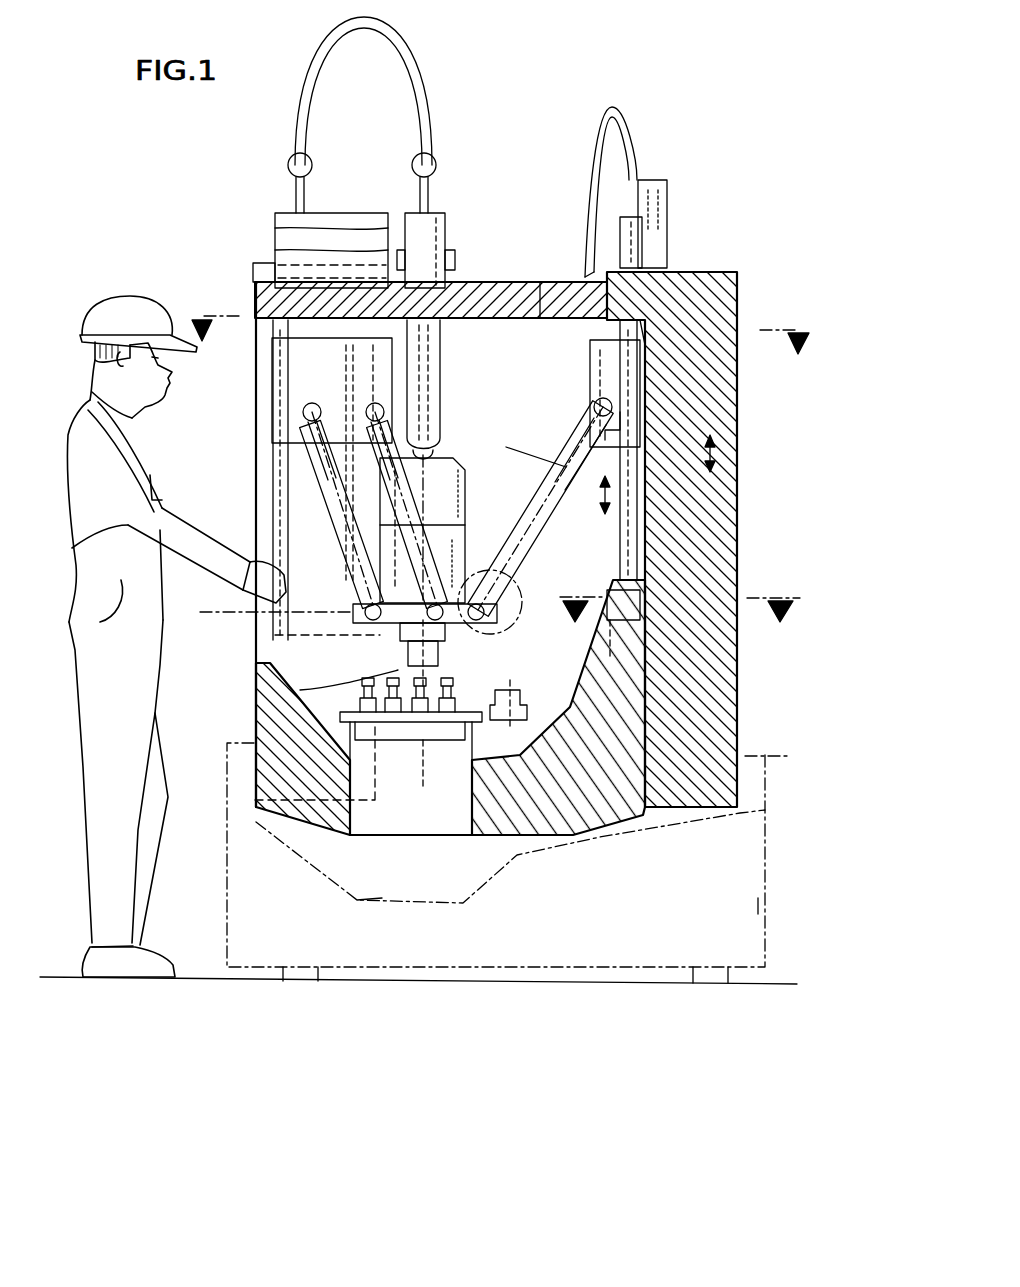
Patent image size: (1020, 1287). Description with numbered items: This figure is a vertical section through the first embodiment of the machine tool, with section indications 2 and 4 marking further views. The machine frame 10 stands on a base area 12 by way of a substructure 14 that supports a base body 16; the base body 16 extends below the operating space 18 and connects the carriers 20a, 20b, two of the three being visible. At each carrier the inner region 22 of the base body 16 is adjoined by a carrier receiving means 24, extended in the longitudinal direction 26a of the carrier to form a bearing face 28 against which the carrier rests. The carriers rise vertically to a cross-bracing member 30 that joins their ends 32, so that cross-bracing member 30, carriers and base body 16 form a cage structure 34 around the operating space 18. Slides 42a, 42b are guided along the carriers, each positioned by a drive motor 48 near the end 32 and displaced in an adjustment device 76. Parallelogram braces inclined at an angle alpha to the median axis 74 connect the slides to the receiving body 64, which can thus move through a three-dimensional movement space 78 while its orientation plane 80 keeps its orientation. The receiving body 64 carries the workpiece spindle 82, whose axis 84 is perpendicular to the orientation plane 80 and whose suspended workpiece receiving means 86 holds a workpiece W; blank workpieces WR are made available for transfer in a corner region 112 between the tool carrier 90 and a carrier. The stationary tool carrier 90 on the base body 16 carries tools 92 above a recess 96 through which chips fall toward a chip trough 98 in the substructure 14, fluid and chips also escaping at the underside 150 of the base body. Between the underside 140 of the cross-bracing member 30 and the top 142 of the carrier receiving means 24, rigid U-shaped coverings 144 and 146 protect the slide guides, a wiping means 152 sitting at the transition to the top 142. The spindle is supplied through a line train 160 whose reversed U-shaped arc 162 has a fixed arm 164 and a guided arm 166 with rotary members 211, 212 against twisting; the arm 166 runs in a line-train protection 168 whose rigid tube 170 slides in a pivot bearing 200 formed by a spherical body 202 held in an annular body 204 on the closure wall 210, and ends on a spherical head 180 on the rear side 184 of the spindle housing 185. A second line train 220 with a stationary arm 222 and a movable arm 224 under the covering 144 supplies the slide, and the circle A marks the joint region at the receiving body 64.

The machine frame 10 is at (718, 832).
The base area 12 is at (748, 983).
The substructure 14 is at (758, 906).
The base body 16 is at (583, 815).
The operating space 18 is at (520, 755).
The carrier 20a is at (650, 713).
The carrier 20b is at (272, 436).
The inner region 22 is at (510, 728).
The carrier receiving means 24 is at (700, 822).
The longitudinal direction 26a is at (708, 443).
The bearing face 28 is at (722, 700).
The cross-bracing member 30 is at (570, 300).
The end 32 is at (707, 296).
The cage structure 34 is at (520, 276).
The slide 42a is at (612, 372).
The slide 42b is at (300, 398).
The drive motor 48 is at (642, 216).
The receiving body 64 is at (398, 632).
The median axis 74 is at (416, 188).
The adjustment device 76 is at (638, 490).
The movement space 78 is at (550, 562).
The orientation plane 80 is at (236, 614).
The workpiece spindle 82 is at (455, 497).
The spindle axis 84 is at (345, 522).
The workpiece receiving means 86 is at (405, 652).
The tool carrier 90 is at (352, 740).
The tools 92 is at (340, 716).
The recess 96 is at (482, 700).
The chip trough 98 is at (382, 898).
The corner region 112 is at (748, 760).
The underside 140 is at (640, 332).
The top 142 is at (640, 618).
The covering 144 is at (650, 210).
The covering 146 is at (628, 515).
The underside 150 is at (640, 817).
The wiping means 152 is at (640, 648).
The line train 160 is at (436, 78).
The reversed U-shaped arc 162 is at (437, 50).
The arm 164 is at (296, 190).
The arm 166 is at (435, 196).
The line-train protection 168 is at (484, 362).
The rigid tube 170 is at (300, 390).
The spherical head 180 is at (440, 450).
The rear side 184 is at (300, 488).
The housing 185 is at (300, 503).
The pivot bearing 200 is at (450, 243).
The spherical body 202 is at (276, 218).
The annular body 204 is at (276, 244).
The closure wall 210 is at (540, 282).
The rotary member 211 is at (288, 162).
The rotary member 212 is at (437, 168).
The line train 220 is at (637, 148).
The stationary arm 222 is at (592, 152).
The movable arm 224 is at (632, 160).
The section line 2- 2 is at (499, 319).
The section line 4- 4 is at (680, 595).
The detail circle A is at (497, 609).
The workpiece W is at (300, 690).
The blank workpiece WR is at (730, 795).
The angle alpha is at (536, 444).